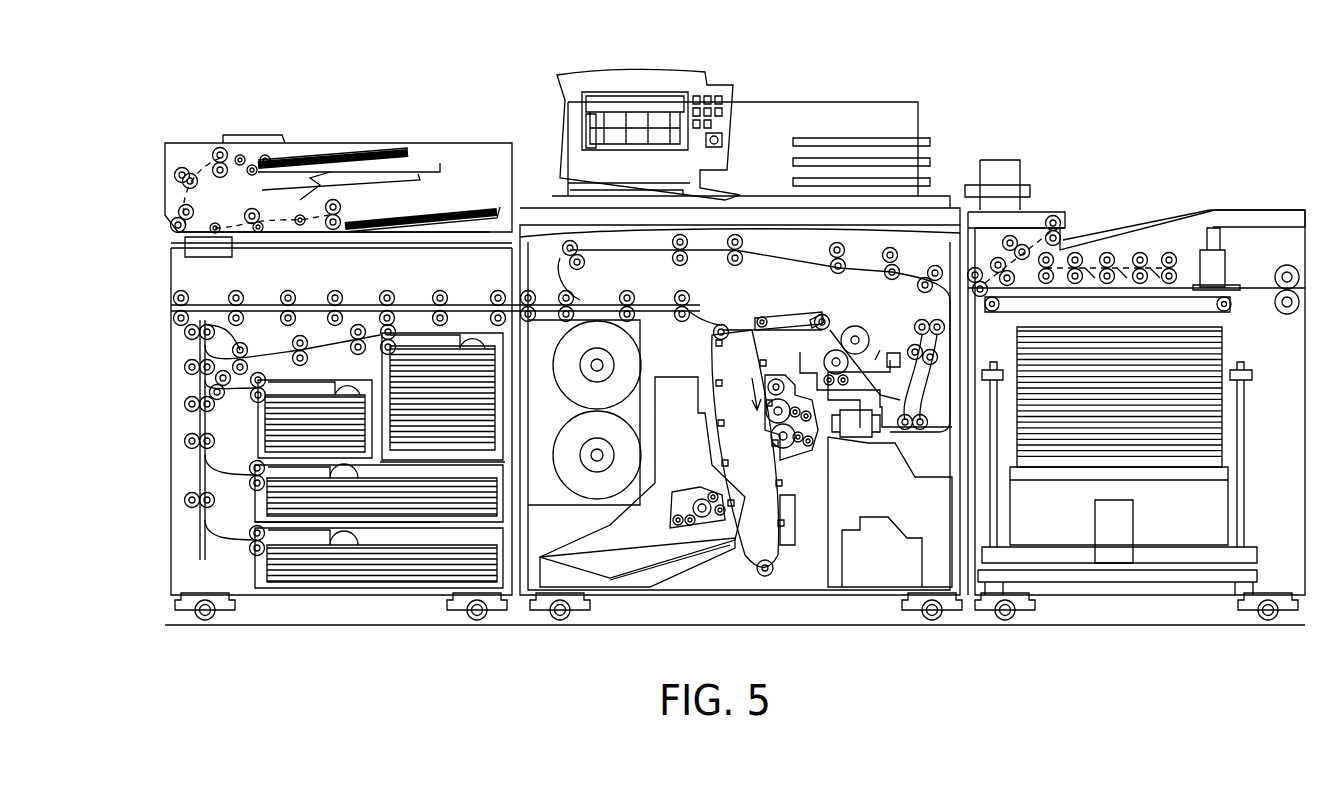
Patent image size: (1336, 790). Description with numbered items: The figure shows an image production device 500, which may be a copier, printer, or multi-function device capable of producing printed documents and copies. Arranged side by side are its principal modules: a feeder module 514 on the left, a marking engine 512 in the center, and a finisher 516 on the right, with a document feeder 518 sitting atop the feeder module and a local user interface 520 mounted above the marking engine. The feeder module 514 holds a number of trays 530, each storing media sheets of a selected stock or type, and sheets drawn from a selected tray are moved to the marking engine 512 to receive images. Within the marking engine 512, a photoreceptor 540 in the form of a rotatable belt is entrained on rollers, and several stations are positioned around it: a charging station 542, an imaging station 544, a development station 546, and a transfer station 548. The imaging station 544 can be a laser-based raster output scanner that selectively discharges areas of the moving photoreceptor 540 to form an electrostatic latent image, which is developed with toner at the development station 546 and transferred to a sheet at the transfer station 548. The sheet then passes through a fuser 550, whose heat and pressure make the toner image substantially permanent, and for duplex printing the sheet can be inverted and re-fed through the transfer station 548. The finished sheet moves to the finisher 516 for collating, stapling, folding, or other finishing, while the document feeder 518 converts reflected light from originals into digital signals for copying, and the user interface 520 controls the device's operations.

The image production device 500 is at (1108, 90).
The marking engine 512 is at (697, 596).
The feeder module 514 is at (258, 596).
The finisher 516 is at (1128, 596).
The document feeder 518 is at (382, 142).
The local user interface 520 is at (815, 100).
The trays 530 is at (252, 510).
The photoreceptor 540 is at (710, 352).
The charging station 542 is at (795, 505).
The imaging station 544 is at (630, 562).
The development station 546 is at (690, 492).
The transfer station 548 is at (735, 322).
The fuser 550 is at (855, 322).